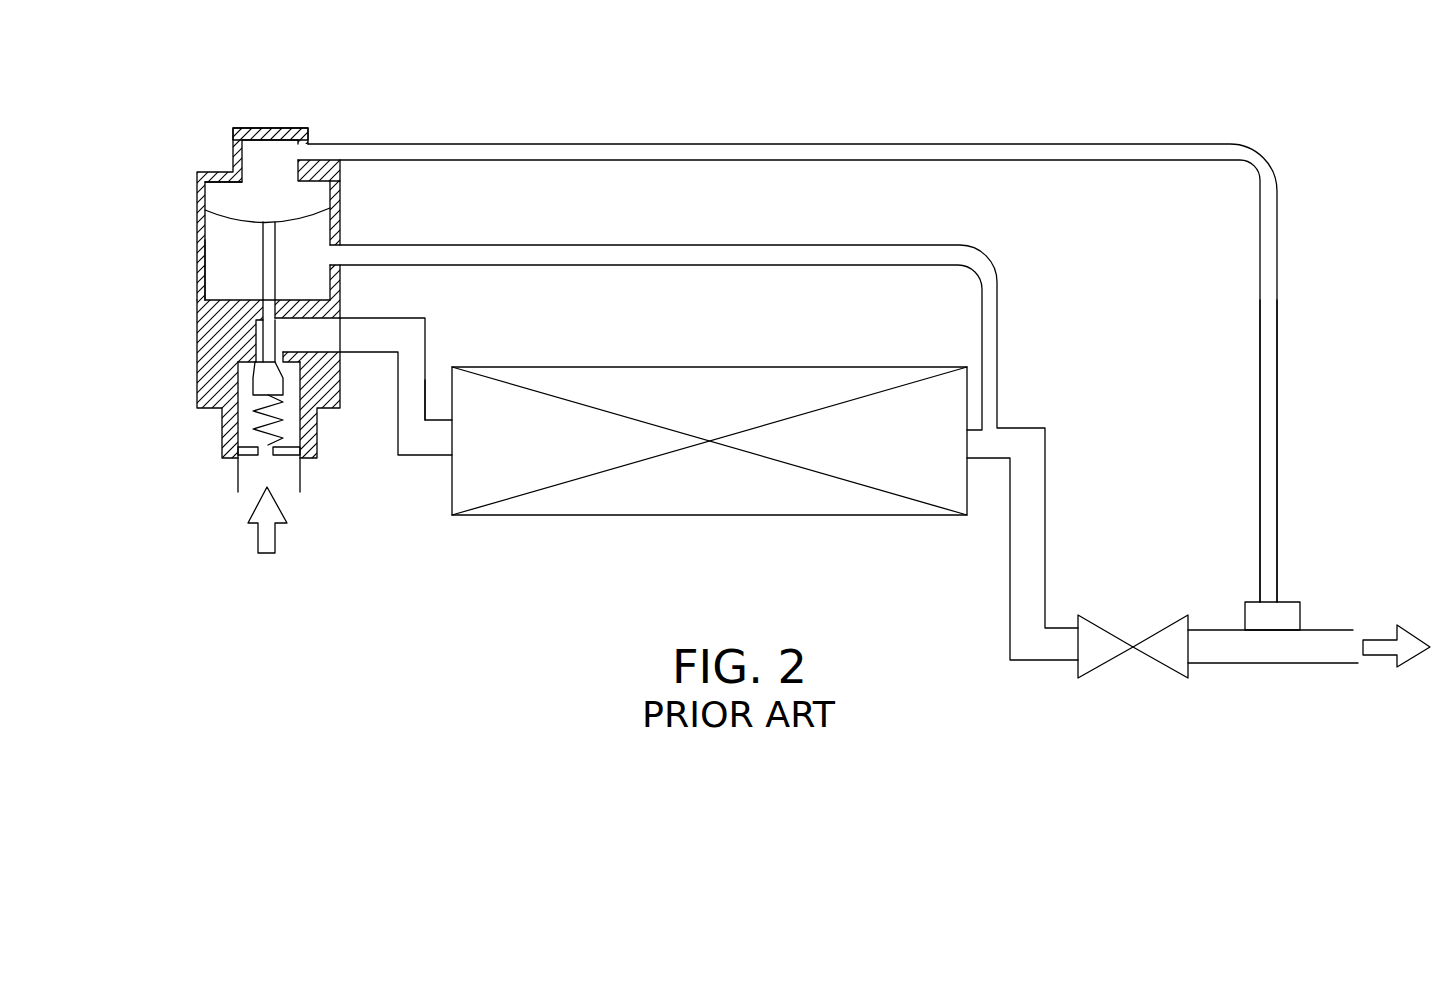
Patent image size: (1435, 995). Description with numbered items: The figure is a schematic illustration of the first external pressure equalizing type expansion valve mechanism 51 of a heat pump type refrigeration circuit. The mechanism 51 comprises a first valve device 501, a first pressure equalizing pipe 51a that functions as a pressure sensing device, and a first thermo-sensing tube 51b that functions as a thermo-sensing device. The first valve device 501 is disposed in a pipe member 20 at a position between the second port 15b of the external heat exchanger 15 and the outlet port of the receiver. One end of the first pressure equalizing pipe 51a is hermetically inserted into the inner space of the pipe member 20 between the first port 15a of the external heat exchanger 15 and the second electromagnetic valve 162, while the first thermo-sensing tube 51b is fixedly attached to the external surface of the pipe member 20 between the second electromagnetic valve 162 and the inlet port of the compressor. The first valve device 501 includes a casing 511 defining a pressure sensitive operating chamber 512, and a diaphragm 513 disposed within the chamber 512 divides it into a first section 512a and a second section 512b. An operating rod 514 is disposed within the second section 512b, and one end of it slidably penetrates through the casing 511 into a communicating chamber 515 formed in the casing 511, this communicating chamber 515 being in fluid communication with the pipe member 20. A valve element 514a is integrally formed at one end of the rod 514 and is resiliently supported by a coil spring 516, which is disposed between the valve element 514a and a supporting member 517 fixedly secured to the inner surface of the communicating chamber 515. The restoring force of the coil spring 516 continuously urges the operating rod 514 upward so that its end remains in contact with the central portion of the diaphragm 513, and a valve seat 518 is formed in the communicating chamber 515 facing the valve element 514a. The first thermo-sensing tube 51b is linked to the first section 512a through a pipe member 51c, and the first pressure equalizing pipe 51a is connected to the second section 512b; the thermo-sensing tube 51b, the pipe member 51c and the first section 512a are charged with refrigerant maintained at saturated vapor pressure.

The external heat exchanger 15 is at (707, 487).
The first port of external heat exchanger 15a is at (993, 448).
The second port of external heat exchanger 15b is at (440, 440).
The pipe member 20 is at (238, 478).
The first external pressure equalizing type expansion valve mechanism 51 is at (1000, 135).
The first pressure equalizing pipe 51a is at (997, 348).
The first thermo-sensing tube 51b is at (1288, 620).
The pipe member 51c is at (1280, 348).
The second electromagnetic valve 162 is at (1130, 650).
The first valve device 501 is at (266, 135).
The casing 511 is at (196, 208).
The pressure sensitive operating chamber 512 is at (218, 232).
The first section 512a is at (231, 170).
The second section 512b is at (222, 258).
The diaphragm 513 is at (205, 180).
The operating rod 514 is at (265, 262).
The valve element 514a is at (260, 383).
The communicating chamber 515 is at (245, 368).
The coil spring 516 is at (247, 425).
The supporting member 517 is at (285, 457).
The valve seat 518 is at (306, 392).